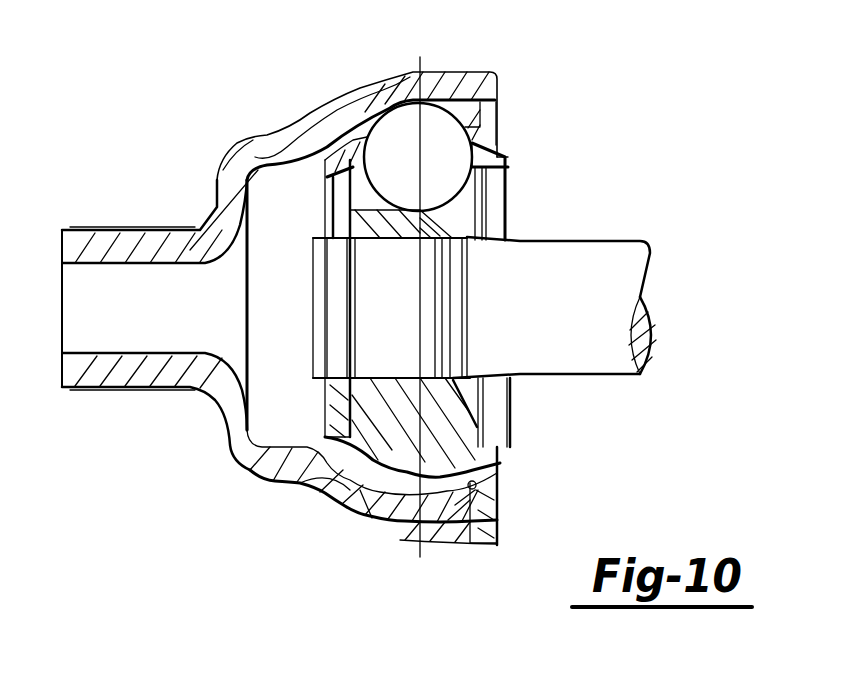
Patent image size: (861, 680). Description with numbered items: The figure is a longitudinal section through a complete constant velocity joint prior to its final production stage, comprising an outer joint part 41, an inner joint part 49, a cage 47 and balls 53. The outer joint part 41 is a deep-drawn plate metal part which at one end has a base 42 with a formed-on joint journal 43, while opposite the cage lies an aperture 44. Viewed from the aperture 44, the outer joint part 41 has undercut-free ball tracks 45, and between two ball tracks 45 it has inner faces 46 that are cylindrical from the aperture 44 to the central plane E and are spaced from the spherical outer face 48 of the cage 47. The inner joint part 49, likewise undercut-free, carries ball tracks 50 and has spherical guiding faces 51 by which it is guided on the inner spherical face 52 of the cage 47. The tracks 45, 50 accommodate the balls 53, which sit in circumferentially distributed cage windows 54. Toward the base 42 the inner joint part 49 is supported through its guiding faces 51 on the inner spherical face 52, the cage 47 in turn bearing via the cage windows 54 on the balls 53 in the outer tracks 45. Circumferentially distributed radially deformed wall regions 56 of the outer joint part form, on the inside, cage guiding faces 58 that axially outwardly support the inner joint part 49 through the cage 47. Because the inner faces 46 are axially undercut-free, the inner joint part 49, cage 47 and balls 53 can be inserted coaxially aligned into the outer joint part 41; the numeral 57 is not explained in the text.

The outer joint part 41 is at (303, 117).
The base 42 is at (255, 157).
The joint journal 43 is at (120, 252).
The aperture 44 is at (498, 130).
The ball tracks 45 is at (477, 110).
The inner faces 46 is at (462, 510).
The cage 47 is at (320, 518).
The spherical outer face 48 is at (303, 503).
The inner joint part 49 is at (447, 420).
The ball tracks 50 is at (450, 210).
The spherical guiding faces 51 is at (378, 520).
The inner spherical face 52 is at (348, 515).
The balls 53 is at (403, 140).
The cage windows 54 is at (380, 110).
The radially deformed wall regions 56 is at (477, 502).
The snap ring 57 is at (487, 530).
The cage guiding faces 58 is at (477, 482).
The central plane E is at (420, 343).